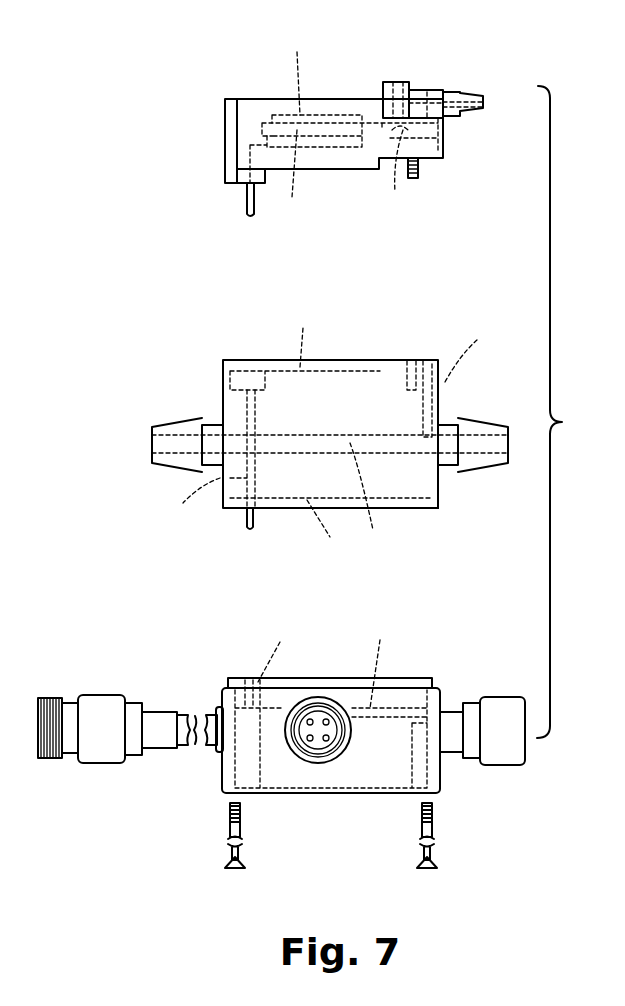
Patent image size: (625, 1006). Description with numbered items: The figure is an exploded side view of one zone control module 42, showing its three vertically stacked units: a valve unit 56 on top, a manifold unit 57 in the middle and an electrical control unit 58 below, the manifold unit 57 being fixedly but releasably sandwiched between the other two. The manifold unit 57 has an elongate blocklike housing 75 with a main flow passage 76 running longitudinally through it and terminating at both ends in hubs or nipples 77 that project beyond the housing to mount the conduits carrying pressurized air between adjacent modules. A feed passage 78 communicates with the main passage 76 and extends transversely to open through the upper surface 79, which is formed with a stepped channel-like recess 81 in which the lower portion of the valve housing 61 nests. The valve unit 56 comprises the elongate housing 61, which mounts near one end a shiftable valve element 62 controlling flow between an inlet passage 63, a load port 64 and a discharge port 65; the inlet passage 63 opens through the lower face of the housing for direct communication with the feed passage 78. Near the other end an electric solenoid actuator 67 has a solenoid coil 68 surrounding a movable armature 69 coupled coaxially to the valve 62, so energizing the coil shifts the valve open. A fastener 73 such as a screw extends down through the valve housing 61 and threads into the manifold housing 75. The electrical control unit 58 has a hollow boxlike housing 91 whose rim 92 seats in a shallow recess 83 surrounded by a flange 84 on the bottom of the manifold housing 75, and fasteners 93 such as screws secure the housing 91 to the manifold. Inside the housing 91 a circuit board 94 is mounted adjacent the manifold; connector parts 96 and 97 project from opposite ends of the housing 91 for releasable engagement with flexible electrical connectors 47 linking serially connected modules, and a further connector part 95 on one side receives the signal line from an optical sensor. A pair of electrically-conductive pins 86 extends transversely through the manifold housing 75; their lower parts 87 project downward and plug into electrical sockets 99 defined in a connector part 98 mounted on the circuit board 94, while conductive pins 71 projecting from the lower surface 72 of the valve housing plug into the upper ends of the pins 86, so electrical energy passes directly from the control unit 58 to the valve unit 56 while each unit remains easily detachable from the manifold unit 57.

The zone control module 42 is at (564, 412).
The flexible electrical connectors 47 is at (160, 717).
The valve unit 56 is at (341, 88).
The manifold unit 57 is at (365, 350).
The electrical control unit 58 is at (332, 835).
The valve housing 61 is at (327, 158).
The shiftable valve element 62 is at (406, 182).
The inlet passage 63 is at (443, 152).
The load port 64 is at (427, 92).
The discharge port 65 is at (393, 82).
The electric solenoid actuator 67 is at (278, 103).
The solenoid coil 68 is at (287, 70).
The movable armature 69 is at (294, 176).
The conductive pins 71 is at (247, 207).
The lower surface of the valve housing 72 is at (350, 168).
The fastener 73 is at (418, 170).
The manifold housing 75 is at (435, 482).
The main flow passage 76 is at (370, 500).
The hubs or nipples 77 is at (480, 418).
The feed passage 78 is at (470, 341).
The upper surface 79 is at (434, 360).
The stepped channel-like recess 81 is at (305, 345).
The shallow recess 83 is at (330, 528).
The flange 84 is at (440, 508).
The electrically-conductive pins 86 is at (207, 458).
The downwardly projecting pin parts 87 is at (247, 525).
The electrical control housing 91 is at (283, 773).
The rim 92 is at (228, 682).
The fasteners 93 is at (430, 830).
The circuit board 94 is at (381, 660).
The connector part 95 is at (325, 743).
The electrical connector part 96 is at (503, 765).
The electrical connector part 97 is at (217, 752).
The connector part 98 is at (242, 678).
The electrical sockets 99 is at (279, 650).